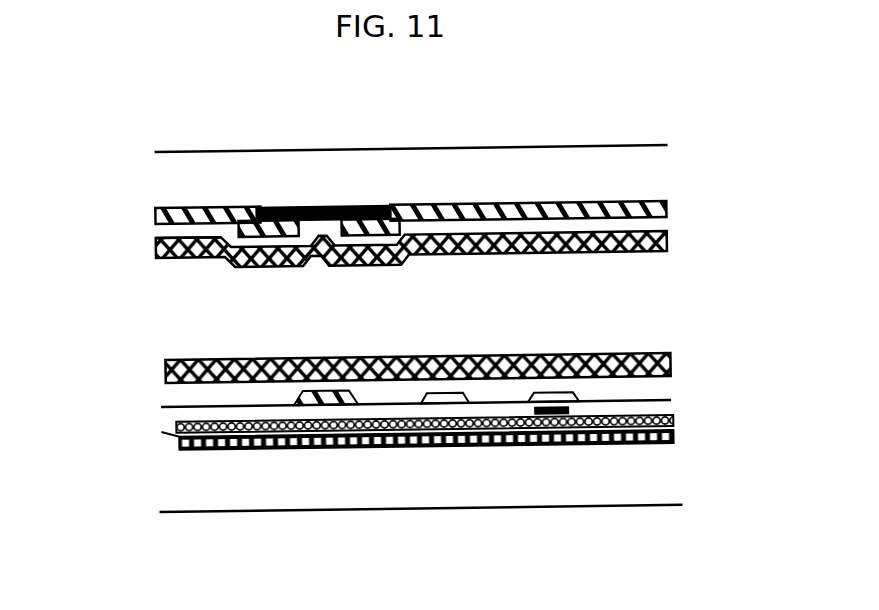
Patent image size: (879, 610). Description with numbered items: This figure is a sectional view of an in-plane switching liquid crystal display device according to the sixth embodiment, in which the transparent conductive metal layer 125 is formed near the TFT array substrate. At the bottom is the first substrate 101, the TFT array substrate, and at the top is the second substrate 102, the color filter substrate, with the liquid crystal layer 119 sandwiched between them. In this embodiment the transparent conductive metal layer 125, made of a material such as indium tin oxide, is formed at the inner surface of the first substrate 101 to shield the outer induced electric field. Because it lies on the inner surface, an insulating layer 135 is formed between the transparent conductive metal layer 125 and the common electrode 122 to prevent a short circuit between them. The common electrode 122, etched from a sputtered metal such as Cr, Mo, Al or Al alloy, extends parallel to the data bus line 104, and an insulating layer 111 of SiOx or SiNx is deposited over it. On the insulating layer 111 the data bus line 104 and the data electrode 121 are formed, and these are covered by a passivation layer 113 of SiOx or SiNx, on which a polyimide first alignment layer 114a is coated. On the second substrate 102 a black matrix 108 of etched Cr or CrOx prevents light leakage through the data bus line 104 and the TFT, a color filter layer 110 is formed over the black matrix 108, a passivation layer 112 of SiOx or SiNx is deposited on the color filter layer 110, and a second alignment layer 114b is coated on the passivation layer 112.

The first substrate 101 is at (655, 488).
The second substrate 102 is at (643, 163).
The data bus line 104 is at (318, 398).
The black matrix 108 is at (318, 208).
The color filter layer 110 is at (670, 216).
The insulating layer 111 is at (652, 408).
The passivation layer 112 is at (173, 236).
The passivation layer 113 is at (650, 387).
The first alignment layer 114a is at (653, 355).
The second alignment layer 114b is at (668, 247).
The liquid crystal layer 119 is at (220, 317).
The data electrode 121 is at (443, 395).
The common electrode 122 is at (553, 410).
The transparent conductive metal layer 125 is at (172, 447).
The insulating layer 135 is at (170, 432).